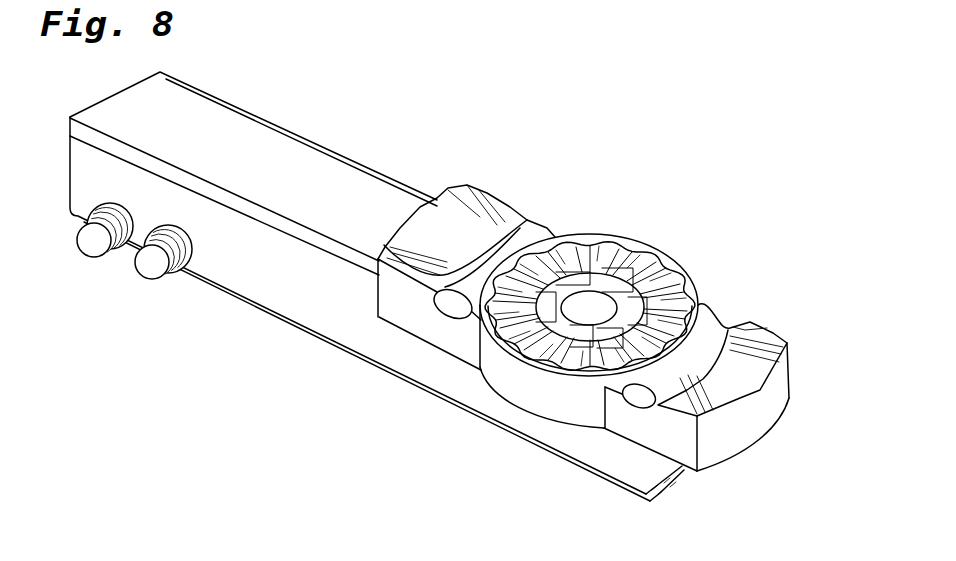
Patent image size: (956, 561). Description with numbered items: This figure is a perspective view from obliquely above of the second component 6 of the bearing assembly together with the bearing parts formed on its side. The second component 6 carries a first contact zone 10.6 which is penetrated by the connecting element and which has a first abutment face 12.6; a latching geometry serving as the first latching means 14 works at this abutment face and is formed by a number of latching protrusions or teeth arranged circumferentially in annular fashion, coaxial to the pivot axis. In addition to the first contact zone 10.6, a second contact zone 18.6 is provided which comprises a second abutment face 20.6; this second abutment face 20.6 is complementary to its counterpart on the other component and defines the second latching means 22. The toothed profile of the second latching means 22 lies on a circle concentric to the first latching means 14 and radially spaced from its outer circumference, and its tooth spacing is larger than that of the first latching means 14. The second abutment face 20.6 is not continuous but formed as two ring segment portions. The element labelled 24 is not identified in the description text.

The second component 6 is at (268, 170).
The second latching means 22 is at (455, 232).
The first latching means 14 is at (588, 262).
The first abutment face 12.6 is at (662, 270).
The second contact zone 18.6 is at (770, 340).
The first contact zone 10.6 is at (493, 366).
The second abutment face 20.6 is at (637, 424).
The locking button 24 is at (478, 292).